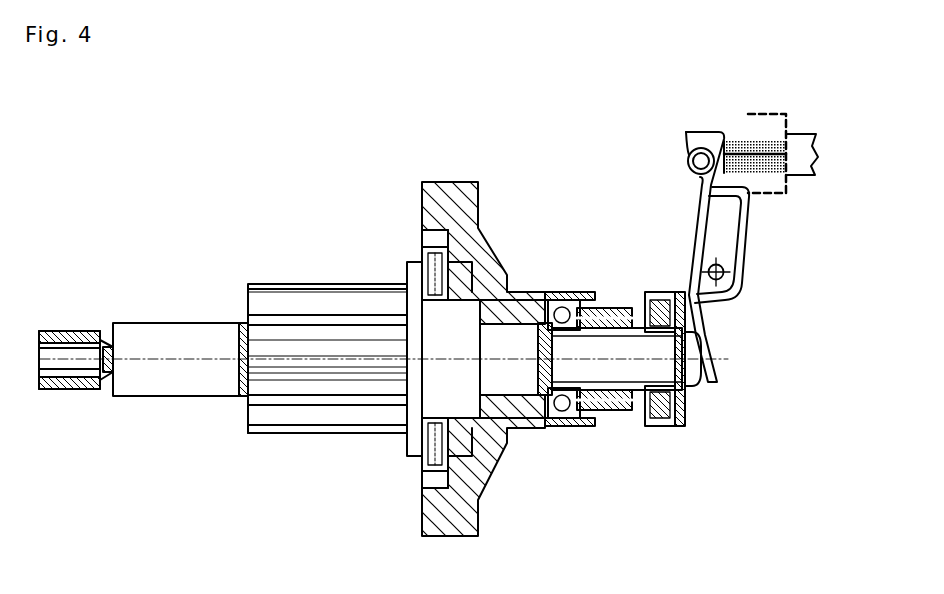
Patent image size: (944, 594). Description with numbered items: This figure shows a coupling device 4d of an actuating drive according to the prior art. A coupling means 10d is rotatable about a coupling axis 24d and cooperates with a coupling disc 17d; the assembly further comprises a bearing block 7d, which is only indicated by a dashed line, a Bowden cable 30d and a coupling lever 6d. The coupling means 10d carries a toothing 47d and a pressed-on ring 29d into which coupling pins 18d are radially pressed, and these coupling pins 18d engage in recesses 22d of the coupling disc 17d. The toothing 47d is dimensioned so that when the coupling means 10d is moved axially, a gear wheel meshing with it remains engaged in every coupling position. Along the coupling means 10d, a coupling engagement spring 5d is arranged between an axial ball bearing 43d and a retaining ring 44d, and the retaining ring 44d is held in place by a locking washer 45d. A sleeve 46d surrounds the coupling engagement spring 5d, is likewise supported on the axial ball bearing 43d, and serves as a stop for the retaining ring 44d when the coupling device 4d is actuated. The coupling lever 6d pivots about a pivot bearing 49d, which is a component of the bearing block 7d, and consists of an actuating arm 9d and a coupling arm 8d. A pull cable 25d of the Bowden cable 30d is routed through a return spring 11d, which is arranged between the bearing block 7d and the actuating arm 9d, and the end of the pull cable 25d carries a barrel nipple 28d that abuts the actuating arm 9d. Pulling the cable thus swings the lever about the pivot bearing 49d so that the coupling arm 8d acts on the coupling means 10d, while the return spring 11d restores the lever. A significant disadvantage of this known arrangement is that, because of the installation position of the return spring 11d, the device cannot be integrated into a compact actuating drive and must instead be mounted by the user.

The coupling device 4d is at (366, 100).
The coupling axis 24d is at (170, 355).
The coupling means 10d is at (249, 281).
The toothing 47d is at (265, 434).
The pressed-on ring 29d is at (412, 449).
The coupling disc 17d is at (432, 505).
The recesses 22d is at (424, 238).
The coupling pins 18d is at (423, 263).
The axial ball bearing 43d is at (558, 303).
The sleeve 46d is at (622, 410).
The coupling engagement spring 5d is at (606, 410).
The retaining ring 44d is at (661, 412).
The locking washer 45d is at (684, 410).
The coupling lever 6d is at (708, 333).
The barrel nipple 28d is at (690, 150).
The actuating arm 9d is at (704, 192).
The pivot bearing 49d is at (703, 266).
The coupling arm 8d is at (718, 373).
The pull cable 25d is at (760, 162).
The return spring 11d is at (728, 140).
The bearing block 7d is at (766, 112).
The Bowden cable 30d is at (819, 177).